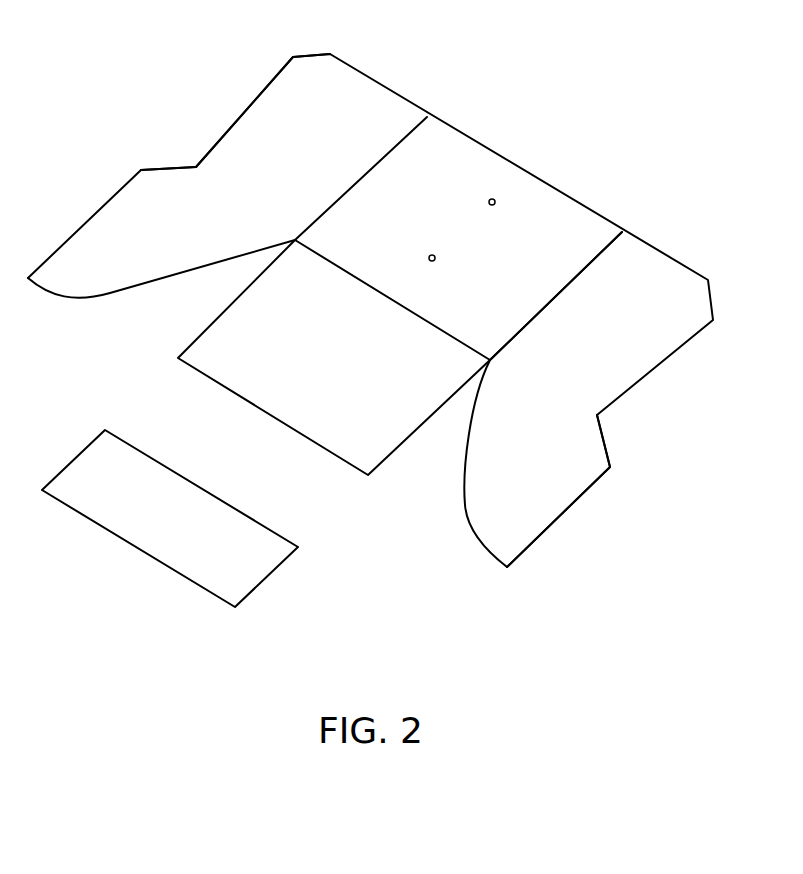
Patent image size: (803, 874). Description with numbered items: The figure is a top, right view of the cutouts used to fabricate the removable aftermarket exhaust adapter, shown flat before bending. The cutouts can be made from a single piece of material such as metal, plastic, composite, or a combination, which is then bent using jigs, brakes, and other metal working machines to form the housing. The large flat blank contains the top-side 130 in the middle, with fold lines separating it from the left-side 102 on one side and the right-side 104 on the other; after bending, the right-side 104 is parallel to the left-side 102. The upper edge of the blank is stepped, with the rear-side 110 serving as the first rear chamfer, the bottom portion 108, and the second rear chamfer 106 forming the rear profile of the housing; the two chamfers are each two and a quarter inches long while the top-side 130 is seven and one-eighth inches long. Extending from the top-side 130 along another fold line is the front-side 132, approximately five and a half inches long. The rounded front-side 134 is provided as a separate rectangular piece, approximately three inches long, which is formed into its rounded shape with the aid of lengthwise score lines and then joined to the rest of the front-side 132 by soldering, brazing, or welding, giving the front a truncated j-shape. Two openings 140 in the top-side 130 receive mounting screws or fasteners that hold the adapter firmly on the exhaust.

The left-side 102 is at (102, 225).
The right-side 104 is at (610, 387).
The second rear chamfer 106 is at (162, 167).
The bottom portion 108 is at (248, 110).
The rear-side 110 is at (317, 55).
The top-side 130 is at (462, 143).
The front-side 132 is at (395, 438).
The rounded front-side piece 134 is at (257, 573).
The openings 140 is at (489, 202).